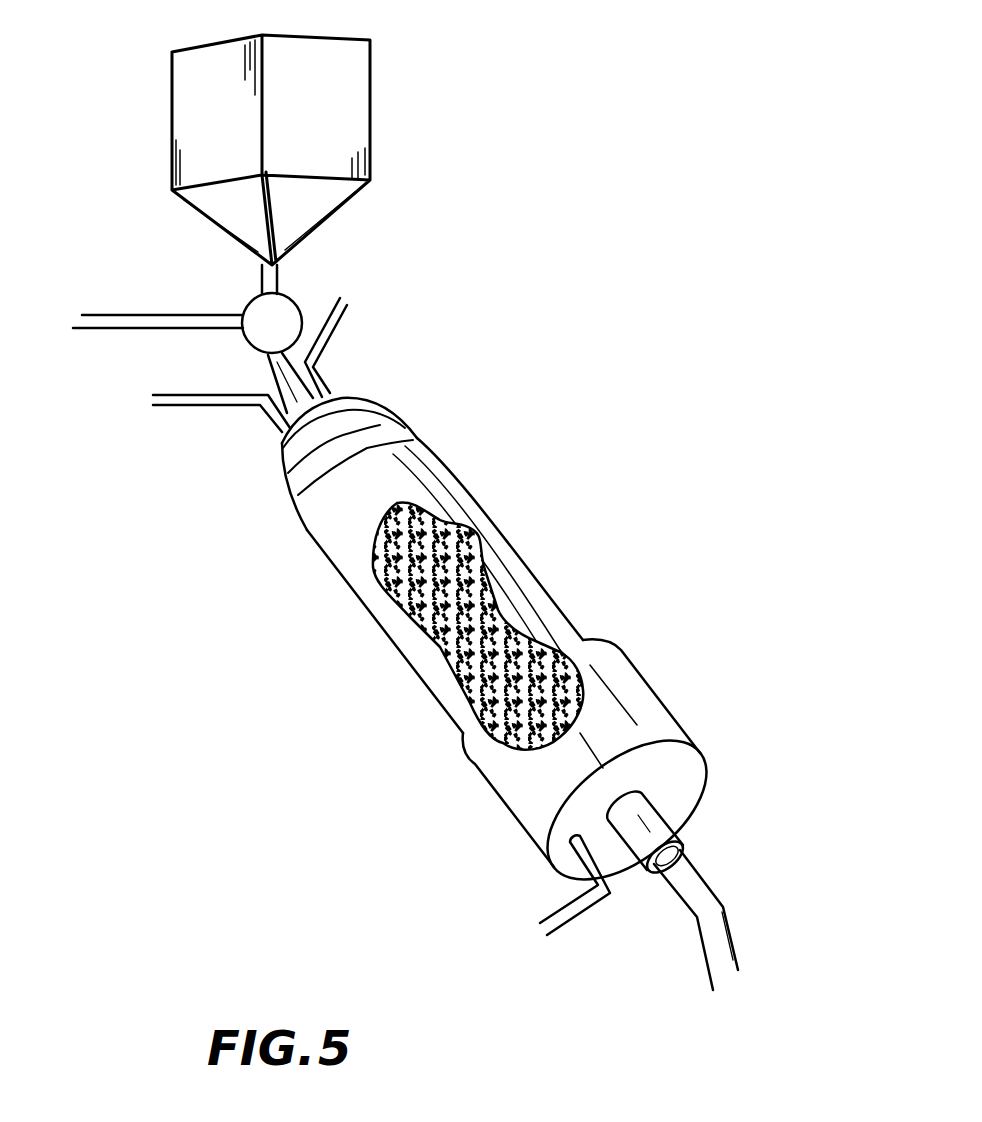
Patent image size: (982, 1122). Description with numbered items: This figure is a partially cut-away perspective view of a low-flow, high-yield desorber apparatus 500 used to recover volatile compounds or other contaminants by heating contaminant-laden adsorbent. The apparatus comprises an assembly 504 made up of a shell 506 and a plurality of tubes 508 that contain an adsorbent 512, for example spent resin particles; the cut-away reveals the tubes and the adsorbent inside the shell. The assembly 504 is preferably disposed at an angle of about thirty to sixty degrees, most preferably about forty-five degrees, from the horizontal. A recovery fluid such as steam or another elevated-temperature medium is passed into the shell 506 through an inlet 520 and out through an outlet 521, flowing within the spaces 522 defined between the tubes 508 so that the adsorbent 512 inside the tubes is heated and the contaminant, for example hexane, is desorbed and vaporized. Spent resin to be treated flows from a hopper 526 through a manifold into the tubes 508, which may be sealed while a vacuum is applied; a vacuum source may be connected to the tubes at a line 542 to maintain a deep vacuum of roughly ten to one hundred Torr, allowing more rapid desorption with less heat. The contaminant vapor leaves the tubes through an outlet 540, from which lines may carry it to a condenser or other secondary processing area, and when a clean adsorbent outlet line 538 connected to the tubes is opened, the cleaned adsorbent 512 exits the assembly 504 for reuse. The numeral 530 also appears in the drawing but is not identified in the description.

The desorber apparatus 500 is at (473, 332).
The assembly 504 is at (481, 480).
The shell 506 is at (543, 567).
The tubes 508 is at (560, 618).
The adsorbent 512 is at (485, 563).
The inlet 520 is at (553, 918).
The outlet 521 is at (336, 332).
The spaces 522 is at (575, 640).
The hopper 526 is at (372, 160).
The valve 530 is at (239, 427).
The clean adsorbent outlet line 538 is at (713, 887).
The outlet 540 is at (193, 405).
The line 542 is at (138, 315).